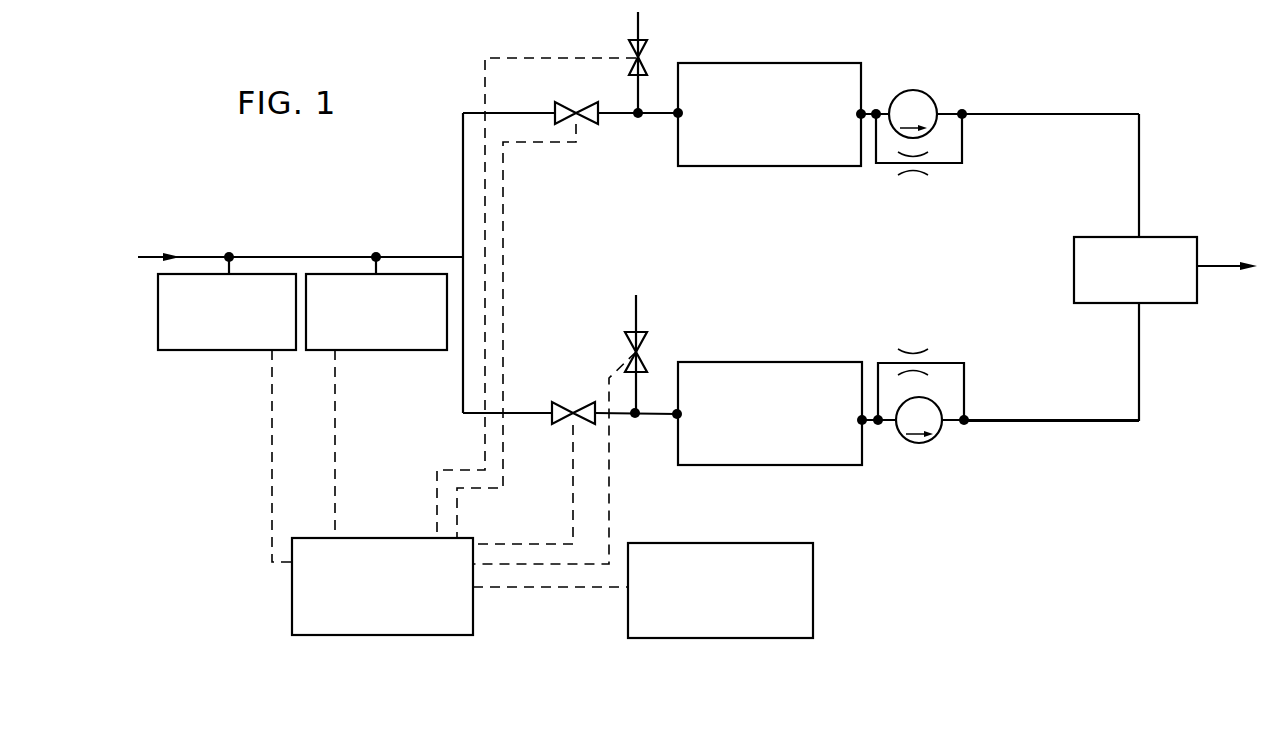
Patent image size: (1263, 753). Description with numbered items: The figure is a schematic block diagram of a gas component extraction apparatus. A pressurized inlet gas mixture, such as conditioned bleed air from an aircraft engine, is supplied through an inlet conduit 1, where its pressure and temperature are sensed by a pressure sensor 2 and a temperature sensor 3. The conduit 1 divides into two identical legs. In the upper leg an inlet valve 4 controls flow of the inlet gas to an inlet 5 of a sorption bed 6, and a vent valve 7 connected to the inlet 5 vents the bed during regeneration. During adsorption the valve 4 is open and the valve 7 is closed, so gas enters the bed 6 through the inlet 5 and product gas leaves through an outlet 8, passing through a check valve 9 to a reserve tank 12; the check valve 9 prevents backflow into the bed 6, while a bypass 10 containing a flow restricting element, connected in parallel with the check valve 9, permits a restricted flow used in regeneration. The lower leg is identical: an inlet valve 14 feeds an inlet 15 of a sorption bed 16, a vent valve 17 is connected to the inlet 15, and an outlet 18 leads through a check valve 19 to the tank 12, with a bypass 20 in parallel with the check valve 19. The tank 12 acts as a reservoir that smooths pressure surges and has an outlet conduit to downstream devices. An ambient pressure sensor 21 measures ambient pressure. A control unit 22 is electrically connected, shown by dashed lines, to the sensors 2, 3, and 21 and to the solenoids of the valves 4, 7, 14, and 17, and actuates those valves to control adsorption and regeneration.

The inlet conduit 1 is at (209, 256).
The pressure sensor 2 is at (222, 352).
The temperature sensor 3 is at (370, 352).
The inlet valve 4 is at (591, 120).
The inlet 5 is at (677, 117).
The sorption bed 6 is at (750, 167).
The vent valve 7 is at (645, 52).
The outlet 8 is at (867, 108).
The check valve 9 is at (925, 94).
The bypass 10 is at (918, 176).
The reserve tank 12 is at (1170, 305).
The inlet valve 14 is at (567, 424).
The inlet 15 is at (676, 418).
The sorption bed 16 is at (740, 361).
The vent valve 17 is at (645, 342).
The outlet 18 is at (865, 424).
The check valve 19 is at (932, 444).
The bypass 20 is at (918, 356).
The pressure sensor 21 is at (813, 577).
The control unit 22 is at (475, 607).